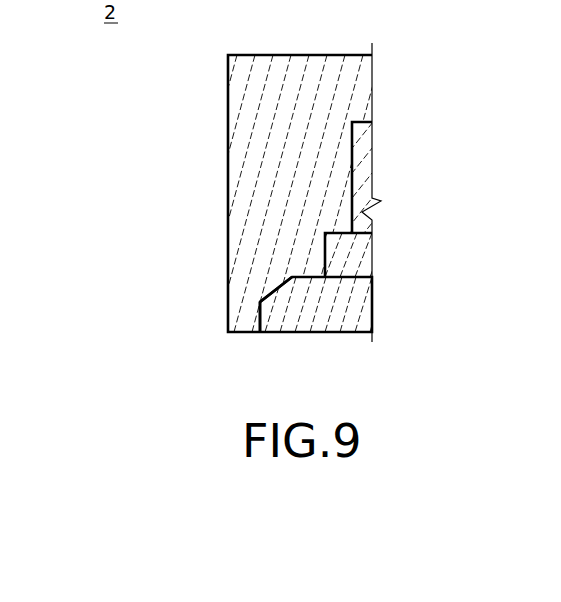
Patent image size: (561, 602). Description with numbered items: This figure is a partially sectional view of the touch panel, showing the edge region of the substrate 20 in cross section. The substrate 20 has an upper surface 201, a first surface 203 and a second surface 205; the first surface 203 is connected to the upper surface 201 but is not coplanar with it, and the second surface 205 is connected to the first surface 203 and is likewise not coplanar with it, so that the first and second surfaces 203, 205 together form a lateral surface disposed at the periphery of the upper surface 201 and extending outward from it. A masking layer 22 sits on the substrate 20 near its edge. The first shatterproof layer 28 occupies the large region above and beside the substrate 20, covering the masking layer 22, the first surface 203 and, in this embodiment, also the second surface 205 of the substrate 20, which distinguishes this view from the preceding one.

The substrate 20 is at (283, 323).
The upper surface 201 is at (340, 262).
The first surface 203 is at (286, 280).
The second surface 205 is at (262, 312).
The masking layer 22 is at (332, 250).
The first shatterproof layer 28 is at (250, 175).